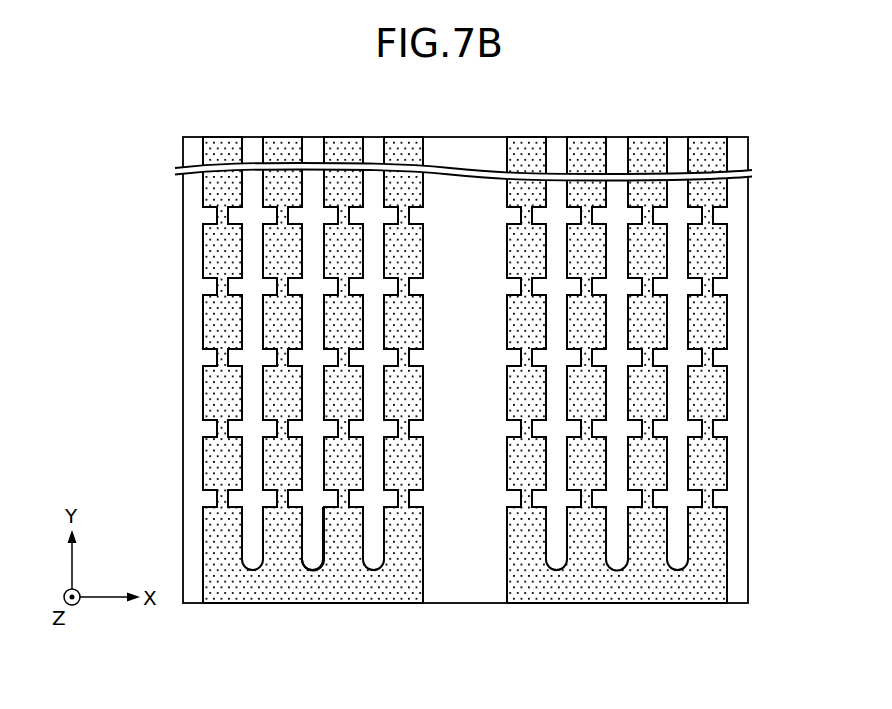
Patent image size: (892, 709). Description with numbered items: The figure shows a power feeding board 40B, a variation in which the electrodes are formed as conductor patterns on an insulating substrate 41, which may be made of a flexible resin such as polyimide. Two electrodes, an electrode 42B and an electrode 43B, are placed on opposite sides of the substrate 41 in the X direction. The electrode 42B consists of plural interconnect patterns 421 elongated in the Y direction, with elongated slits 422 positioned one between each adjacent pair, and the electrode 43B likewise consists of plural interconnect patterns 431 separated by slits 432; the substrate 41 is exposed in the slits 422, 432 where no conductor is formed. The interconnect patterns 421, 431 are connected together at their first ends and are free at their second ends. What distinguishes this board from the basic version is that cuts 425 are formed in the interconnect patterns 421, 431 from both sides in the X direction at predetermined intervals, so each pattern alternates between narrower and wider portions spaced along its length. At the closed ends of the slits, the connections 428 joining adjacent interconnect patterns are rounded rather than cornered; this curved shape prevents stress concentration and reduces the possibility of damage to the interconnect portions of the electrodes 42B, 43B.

The power feeding board 40B is at (97, 92).
The insulating substrate 41 is at (191, 147).
The electrode 42B is at (265, 373).
The electrode 43B is at (665, 345).
The interconnect patterns 421 is at (222, 257).
The slits 422 is at (228, 287).
The cuts 425 is at (210, 357).
The connections 428 is at (308, 565).
The interconnect patterns 431 is at (708, 257).
The slits 432 is at (702, 287).